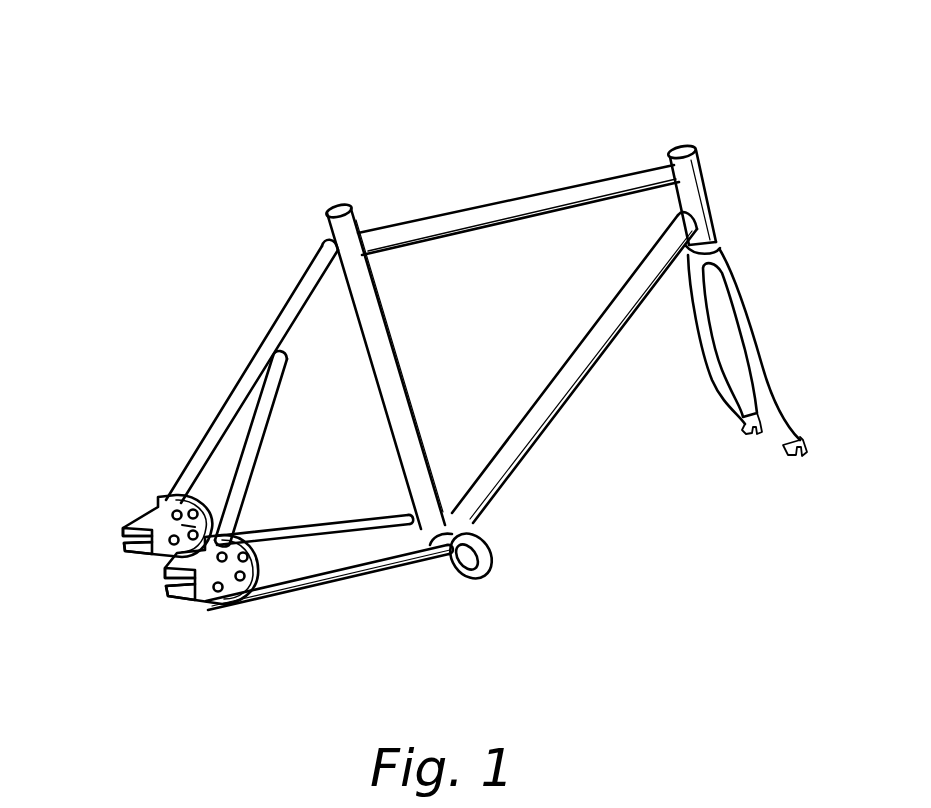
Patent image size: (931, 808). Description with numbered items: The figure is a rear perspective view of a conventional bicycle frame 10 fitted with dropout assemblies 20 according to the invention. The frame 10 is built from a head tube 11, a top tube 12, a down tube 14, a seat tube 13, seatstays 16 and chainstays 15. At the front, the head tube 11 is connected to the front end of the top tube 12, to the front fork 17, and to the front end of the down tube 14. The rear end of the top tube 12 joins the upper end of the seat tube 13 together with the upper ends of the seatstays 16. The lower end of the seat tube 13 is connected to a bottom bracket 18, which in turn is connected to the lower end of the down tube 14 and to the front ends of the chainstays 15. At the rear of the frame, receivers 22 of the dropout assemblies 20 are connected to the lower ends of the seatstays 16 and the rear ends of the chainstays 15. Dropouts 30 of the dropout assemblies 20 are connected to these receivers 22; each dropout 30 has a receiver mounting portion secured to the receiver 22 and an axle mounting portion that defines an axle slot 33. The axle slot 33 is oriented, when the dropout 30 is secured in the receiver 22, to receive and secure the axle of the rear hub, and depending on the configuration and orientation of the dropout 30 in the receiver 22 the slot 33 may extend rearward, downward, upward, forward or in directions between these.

The bicycle frame 10 is at (688, 106).
The head tube 11 is at (708, 192).
The top tube 12 is at (535, 191).
The seat tube 13 is at (391, 326).
The down tube 14 is at (557, 368).
The chainstays 15 is at (286, 522).
The seatstays 16 is at (233, 392).
The front fork 17 is at (753, 311).
The bottom bracket 18 is at (494, 568).
The dropout assembly 20 is at (140, 490).
The receiver 22 is at (167, 500).
The dropout 30 is at (127, 522).
The axle slot 33 is at (127, 542).